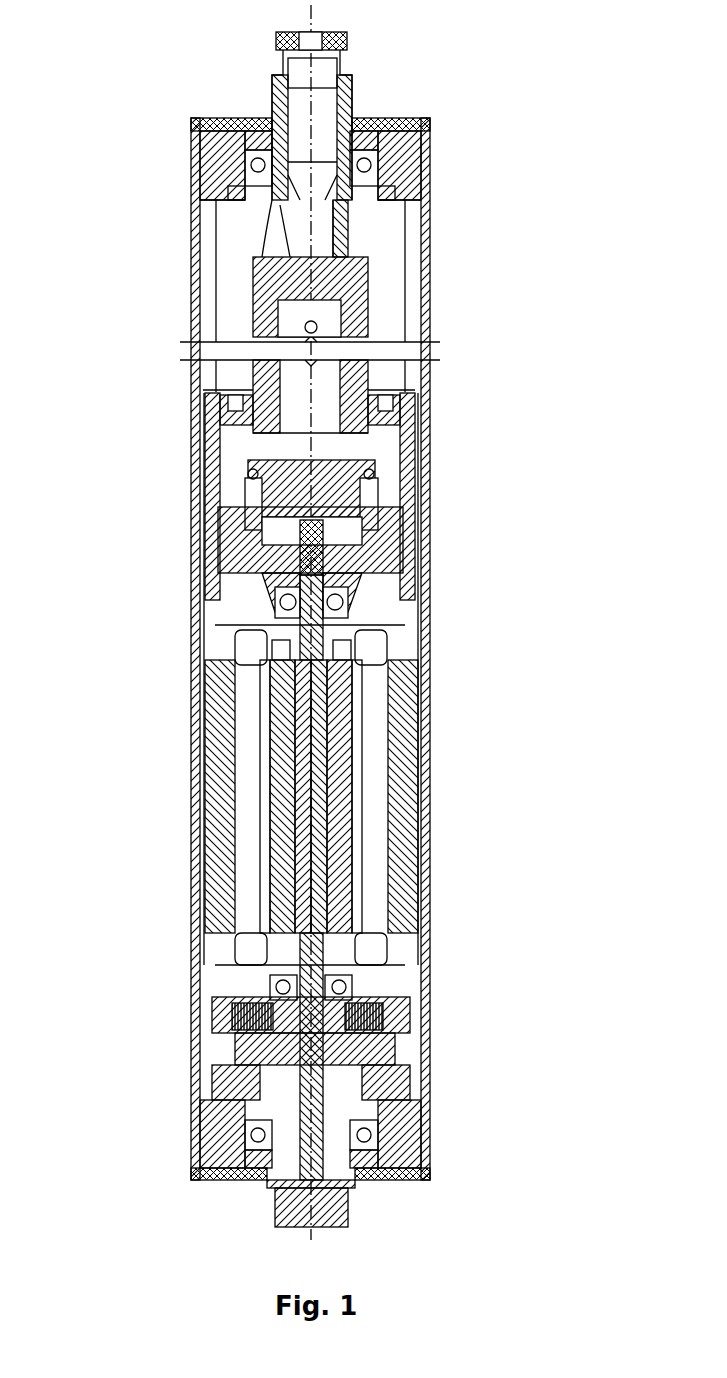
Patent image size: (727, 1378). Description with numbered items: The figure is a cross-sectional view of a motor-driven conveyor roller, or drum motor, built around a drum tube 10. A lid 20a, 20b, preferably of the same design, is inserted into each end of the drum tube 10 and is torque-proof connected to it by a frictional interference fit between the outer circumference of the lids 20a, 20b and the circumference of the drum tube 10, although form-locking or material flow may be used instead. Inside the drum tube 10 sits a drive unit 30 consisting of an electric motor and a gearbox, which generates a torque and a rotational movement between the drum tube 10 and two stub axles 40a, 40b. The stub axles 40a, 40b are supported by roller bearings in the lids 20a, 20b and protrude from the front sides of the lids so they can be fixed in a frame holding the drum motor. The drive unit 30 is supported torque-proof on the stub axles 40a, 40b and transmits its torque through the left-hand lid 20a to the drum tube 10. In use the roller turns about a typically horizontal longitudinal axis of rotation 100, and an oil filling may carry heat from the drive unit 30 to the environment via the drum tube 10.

The drum tube 10 is at (190, 716).
The lid 20a is at (227, 1157).
The lid 20b is at (192, 133).
The drive unit 30 is at (300, 995).
The stub axle 40a is at (300, 1195).
The stub axle 40b is at (280, 95).
The longitudinal axis of rotation 100 is at (348, 108).